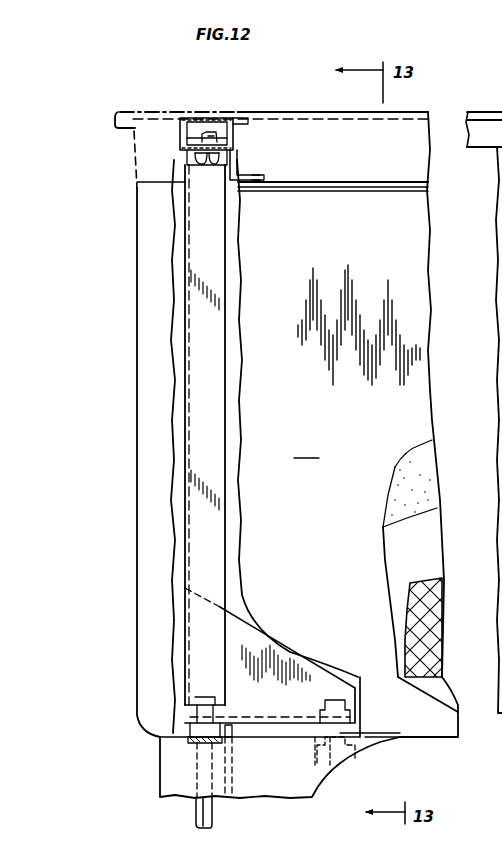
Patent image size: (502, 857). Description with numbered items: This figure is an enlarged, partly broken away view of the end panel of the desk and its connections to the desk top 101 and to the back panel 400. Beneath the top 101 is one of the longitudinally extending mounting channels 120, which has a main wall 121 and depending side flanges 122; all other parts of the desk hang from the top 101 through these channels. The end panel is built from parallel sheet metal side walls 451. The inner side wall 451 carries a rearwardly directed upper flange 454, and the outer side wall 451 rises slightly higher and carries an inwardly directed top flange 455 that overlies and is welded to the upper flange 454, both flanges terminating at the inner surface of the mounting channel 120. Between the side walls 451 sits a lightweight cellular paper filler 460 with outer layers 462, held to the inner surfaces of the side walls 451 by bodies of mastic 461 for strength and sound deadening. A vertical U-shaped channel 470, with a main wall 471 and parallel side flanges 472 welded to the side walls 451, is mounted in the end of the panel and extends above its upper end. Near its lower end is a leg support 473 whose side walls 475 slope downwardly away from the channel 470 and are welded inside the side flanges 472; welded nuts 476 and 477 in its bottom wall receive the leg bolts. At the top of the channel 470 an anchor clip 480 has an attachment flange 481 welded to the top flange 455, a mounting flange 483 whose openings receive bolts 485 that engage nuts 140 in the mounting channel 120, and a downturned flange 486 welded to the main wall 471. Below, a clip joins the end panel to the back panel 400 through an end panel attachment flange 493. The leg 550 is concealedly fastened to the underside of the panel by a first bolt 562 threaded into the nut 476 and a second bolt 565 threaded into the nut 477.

The desk top 101 is at (118, 105).
The mounting channel 120 is at (226, 132).
The main wall 121 is at (209, 130).
The side flange 122 is at (242, 135).
The nut 140 is at (195, 135).
The back panel 400 is at (498, 360).
The side wall 451 is at (418, 452).
The upper flange 454 is at (360, 191).
The top flange 455 is at (380, 183).
The filler 460 is at (426, 613).
The mastic 461 is at (420, 491).
The outer layer 462 is at (428, 538).
The channel 470 is at (205, 387).
The main wall 471 is at (186, 449).
The side flange 472 is at (194, 560).
The leg support 473 is at (276, 690).
The side wall 475 is at (290, 664).
The nut 476 is at (175, 710).
The nut 477 is at (371, 708).
The anchor clip 480 is at (246, 170).
The attachment flange 481 is at (256, 177).
The mounting flange 483 is at (197, 159).
The bolt 485 is at (236, 186).
The downturned flange 486 is at (192, 158).
The end panel attachment flange 493 is at (196, 742).
The leg 550 is at (252, 762).
The first bolt 562 is at (200, 818).
The second bolt 565 is at (352, 746).